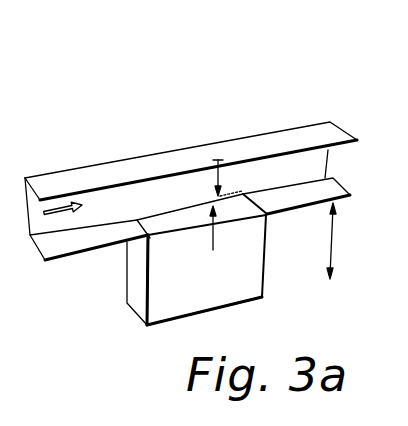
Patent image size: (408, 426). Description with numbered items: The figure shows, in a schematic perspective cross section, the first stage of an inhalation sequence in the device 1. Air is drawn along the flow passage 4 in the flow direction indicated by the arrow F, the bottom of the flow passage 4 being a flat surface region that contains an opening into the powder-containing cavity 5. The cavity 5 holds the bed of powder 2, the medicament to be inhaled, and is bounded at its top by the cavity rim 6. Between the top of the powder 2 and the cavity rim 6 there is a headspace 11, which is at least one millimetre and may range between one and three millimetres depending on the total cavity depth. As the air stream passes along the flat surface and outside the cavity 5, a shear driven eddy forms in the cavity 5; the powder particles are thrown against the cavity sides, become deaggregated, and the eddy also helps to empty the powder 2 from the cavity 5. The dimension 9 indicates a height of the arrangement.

The device 1 is at (238, 114).
The powder 2 is at (240, 269).
The flow passage 4 is at (285, 181).
The cavity 5 is at (270, 246).
The cavity rim 6 is at (134, 220).
The height dimension 9 is at (333, 240).
The headspace 11 is at (214, 202).